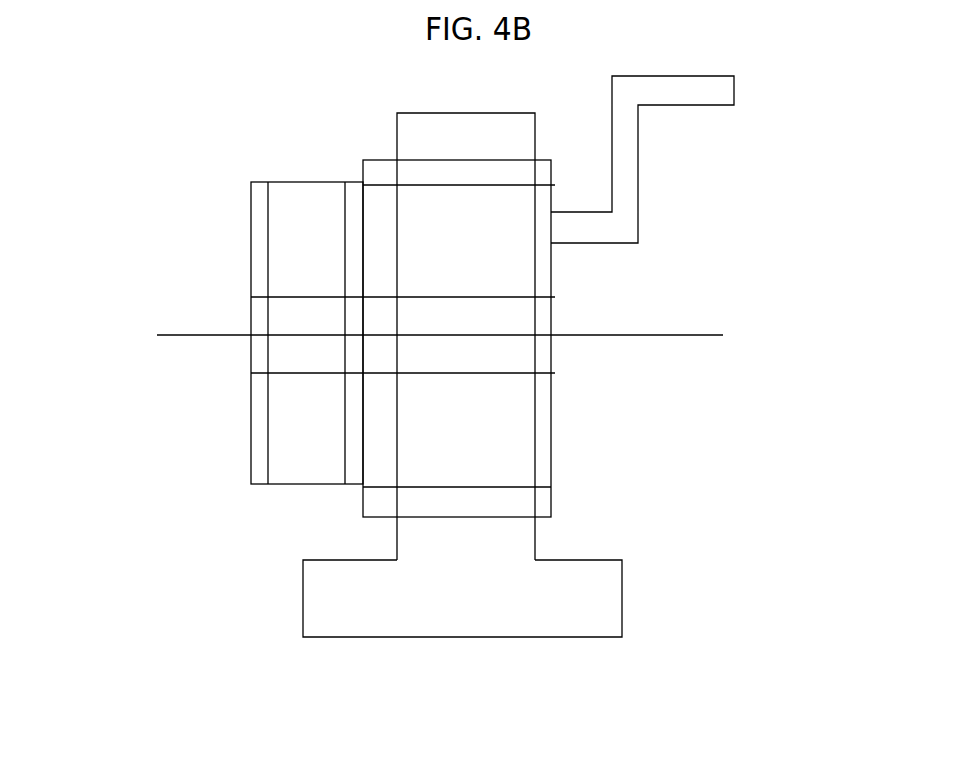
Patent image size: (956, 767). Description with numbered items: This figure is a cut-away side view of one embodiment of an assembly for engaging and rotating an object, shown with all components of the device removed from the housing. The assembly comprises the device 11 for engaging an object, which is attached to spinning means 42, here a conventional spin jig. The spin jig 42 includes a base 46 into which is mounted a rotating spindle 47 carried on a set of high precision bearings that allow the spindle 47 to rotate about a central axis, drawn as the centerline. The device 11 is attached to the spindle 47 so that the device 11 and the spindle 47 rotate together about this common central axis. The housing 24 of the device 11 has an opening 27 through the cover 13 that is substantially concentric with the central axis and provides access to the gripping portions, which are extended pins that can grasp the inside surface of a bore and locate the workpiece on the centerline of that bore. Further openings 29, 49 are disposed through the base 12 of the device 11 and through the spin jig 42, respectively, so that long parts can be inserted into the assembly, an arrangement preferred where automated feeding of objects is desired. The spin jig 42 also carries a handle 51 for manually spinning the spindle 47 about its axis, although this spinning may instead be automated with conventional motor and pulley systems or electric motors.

The device for engaging an object 11 is at (275, 174).
The base of the device 12 is at (353, 463).
The cover 13 is at (260, 210).
The housing 24 is at (295, 408).
The opening 27 is at (251, 357).
The opening 29 is at (357, 328).
The spinning means 42 is at (630, 424).
The base 46 is at (503, 547).
The spindle 47 is at (380, 500).
The opening 49 is at (545, 352).
The handle 51 is at (630, 137).